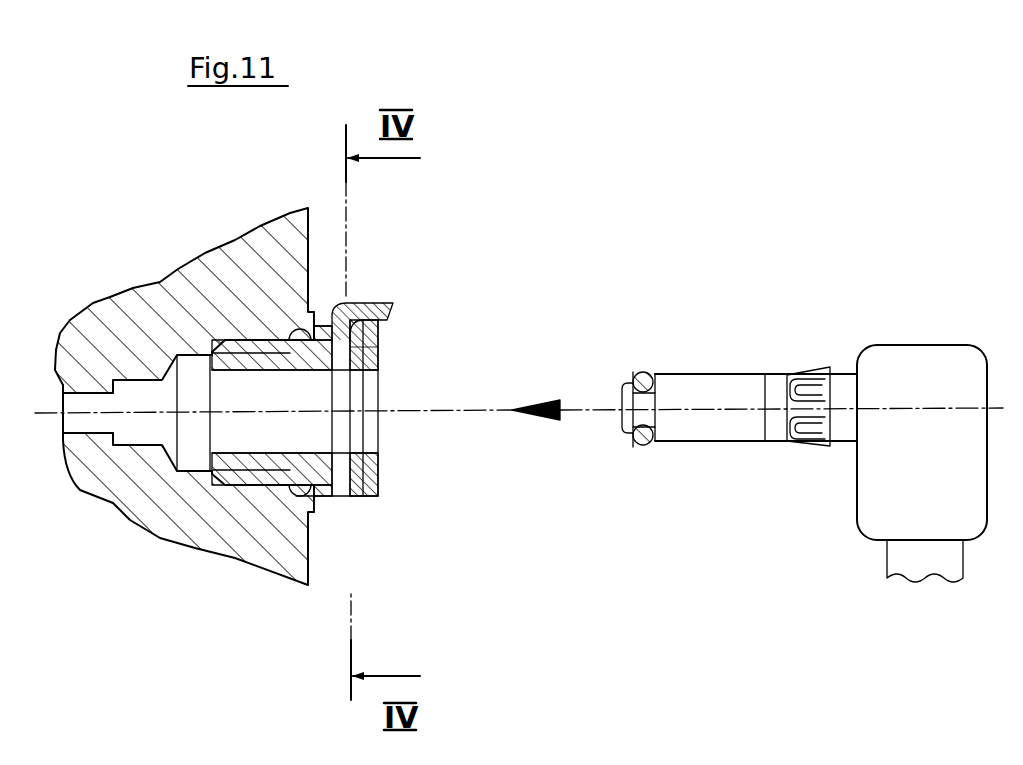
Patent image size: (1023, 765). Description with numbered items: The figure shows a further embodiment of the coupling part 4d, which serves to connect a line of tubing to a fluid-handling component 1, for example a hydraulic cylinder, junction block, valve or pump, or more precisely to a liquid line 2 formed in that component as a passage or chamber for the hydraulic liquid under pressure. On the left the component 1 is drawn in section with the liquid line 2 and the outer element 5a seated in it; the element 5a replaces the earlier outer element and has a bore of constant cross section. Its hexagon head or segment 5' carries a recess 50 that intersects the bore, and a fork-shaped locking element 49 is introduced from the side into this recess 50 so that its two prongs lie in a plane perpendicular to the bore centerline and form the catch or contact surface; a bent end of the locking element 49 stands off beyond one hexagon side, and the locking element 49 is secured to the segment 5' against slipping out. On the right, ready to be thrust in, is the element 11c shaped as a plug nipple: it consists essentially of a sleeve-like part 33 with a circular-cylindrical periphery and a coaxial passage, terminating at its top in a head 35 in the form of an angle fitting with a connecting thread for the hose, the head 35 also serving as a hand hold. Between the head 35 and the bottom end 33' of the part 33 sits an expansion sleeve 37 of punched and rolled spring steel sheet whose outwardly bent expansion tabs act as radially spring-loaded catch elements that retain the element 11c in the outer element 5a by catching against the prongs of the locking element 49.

The fluid-handling component 1 is at (145, 487).
The liquid line 2 is at (95, 425).
The coupling part 4d is at (112, 250).
The locking element 49 is at (327, 400).
The hexagon head or segment 5' is at (398, 382).
The recess 50 is at (364, 348).
The element 5a is at (366, 502).
The element 11c is at (788, 407).
The part 33 is at (739, 438).
The bottom end 33' is at (610, 438).
The head 35 is at (893, 477).
The expansion sleeve 37 is at (773, 387).